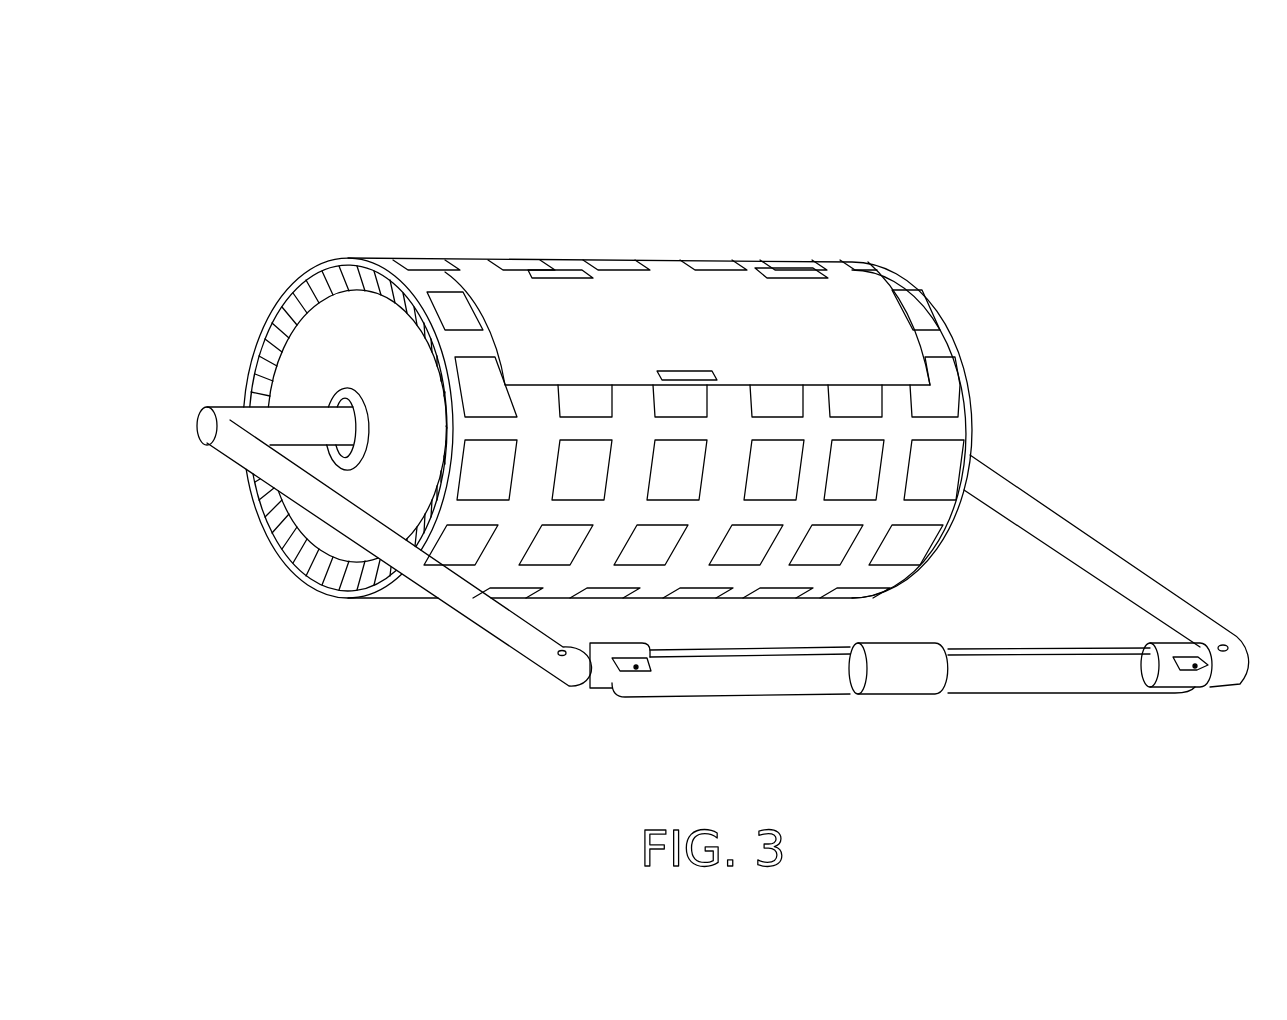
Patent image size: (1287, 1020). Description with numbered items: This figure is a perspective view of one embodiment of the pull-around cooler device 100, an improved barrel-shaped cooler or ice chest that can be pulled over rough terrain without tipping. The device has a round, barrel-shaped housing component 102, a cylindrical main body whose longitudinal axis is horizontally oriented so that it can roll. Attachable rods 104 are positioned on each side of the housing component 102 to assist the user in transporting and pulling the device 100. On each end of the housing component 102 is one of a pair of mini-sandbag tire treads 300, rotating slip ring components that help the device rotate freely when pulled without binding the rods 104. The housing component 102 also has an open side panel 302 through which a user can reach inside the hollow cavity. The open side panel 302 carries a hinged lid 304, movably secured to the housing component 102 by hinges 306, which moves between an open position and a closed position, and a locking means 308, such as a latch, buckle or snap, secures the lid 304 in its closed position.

The pull-around cooler device 100 is at (700, 407).
The housing component 102 is at (599, 447).
The attachable rods 104 is at (1070, 533).
The mini-sandbag tire treads 300 is at (266, 322).
The open side panel 302 is at (737, 272).
The hinged lid 304 is at (683, 337).
The hinges 306 is at (547, 270).
The locking means 308 is at (660, 374).